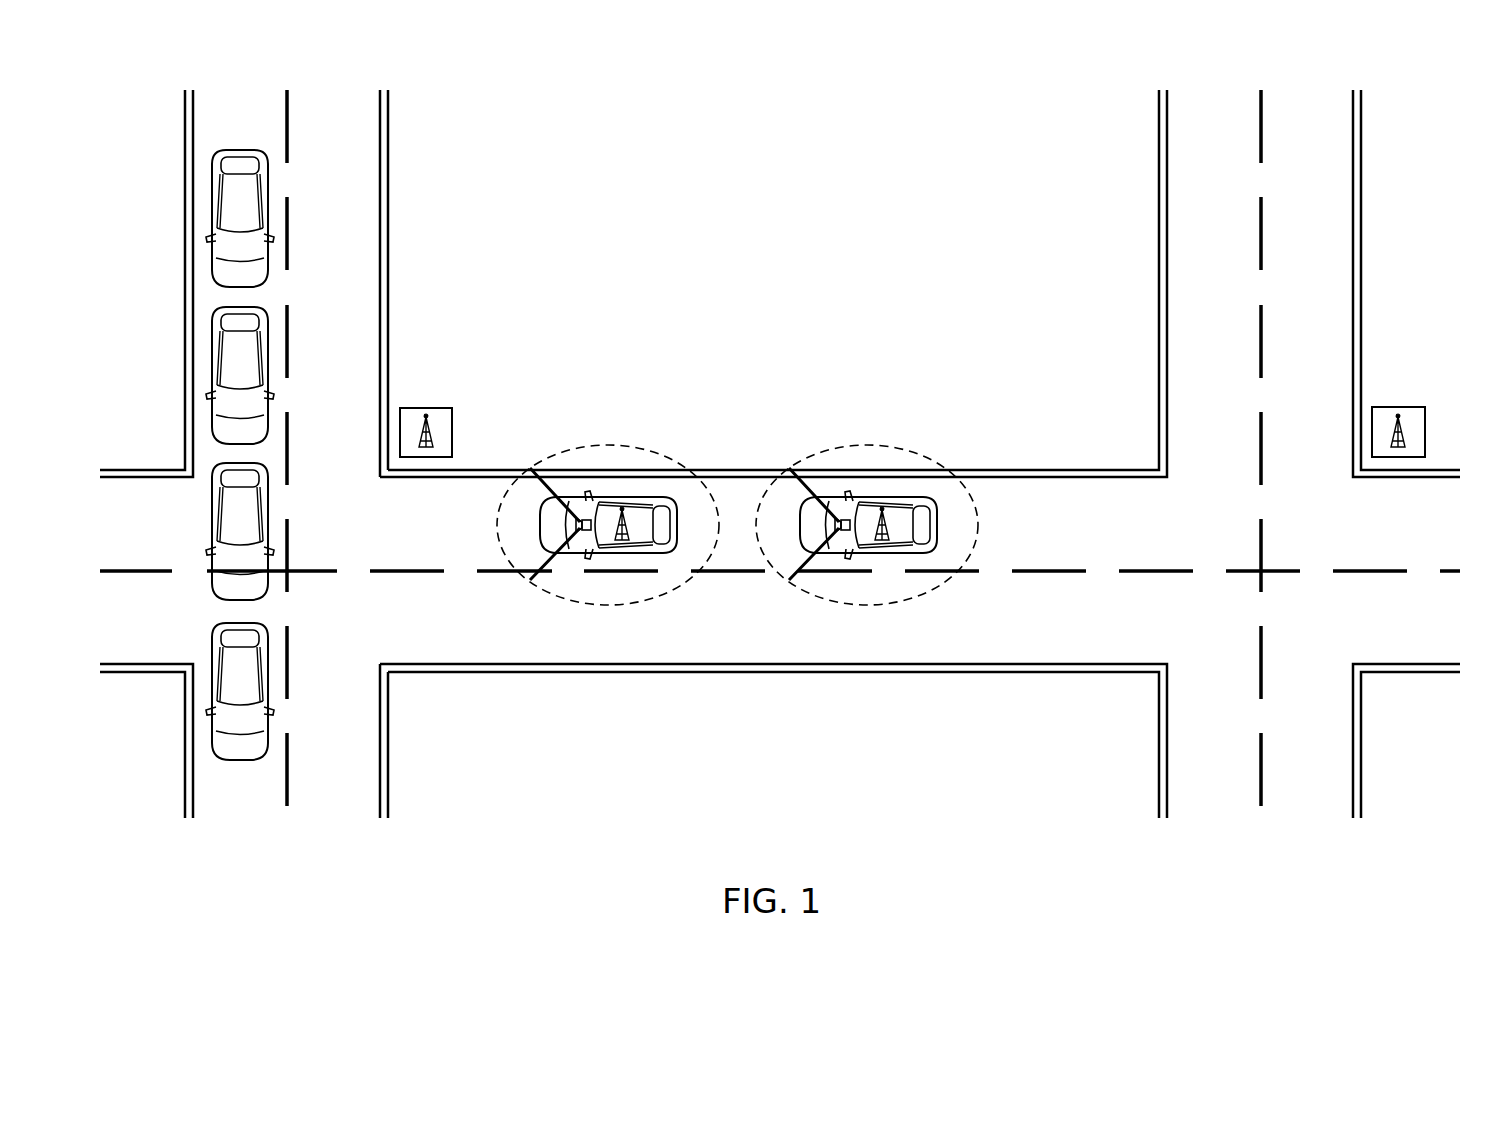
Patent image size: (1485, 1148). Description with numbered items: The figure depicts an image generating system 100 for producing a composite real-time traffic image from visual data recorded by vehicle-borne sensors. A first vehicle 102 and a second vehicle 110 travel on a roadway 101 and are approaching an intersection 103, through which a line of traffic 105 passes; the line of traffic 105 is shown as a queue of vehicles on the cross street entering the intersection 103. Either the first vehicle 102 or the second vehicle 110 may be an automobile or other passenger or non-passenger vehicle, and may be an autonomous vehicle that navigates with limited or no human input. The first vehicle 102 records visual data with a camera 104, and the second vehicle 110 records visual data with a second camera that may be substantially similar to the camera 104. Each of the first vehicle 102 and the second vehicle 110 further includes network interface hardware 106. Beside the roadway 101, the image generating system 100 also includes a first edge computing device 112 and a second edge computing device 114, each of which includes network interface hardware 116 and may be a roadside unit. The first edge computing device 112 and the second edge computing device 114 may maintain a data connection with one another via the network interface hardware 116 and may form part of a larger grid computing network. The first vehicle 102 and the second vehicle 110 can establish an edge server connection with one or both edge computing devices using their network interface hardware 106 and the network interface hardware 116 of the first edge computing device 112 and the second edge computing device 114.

The image generating system 100 is at (840, 182).
The roadway 101 is at (1073, 490).
The first vehicle 102 is at (660, 502).
The intersection 103 is at (176, 453).
The camera 104 is at (577, 525).
The line of traffic 105 is at (301, 249).
The network interface hardware 106 is at (622, 541).
The second vehicle 110 is at (917, 502).
The first edge computing device 112 is at (427, 408).
The second edge computing device 114 is at (1398, 407).
The network interface hardware 116 is at (433, 440).